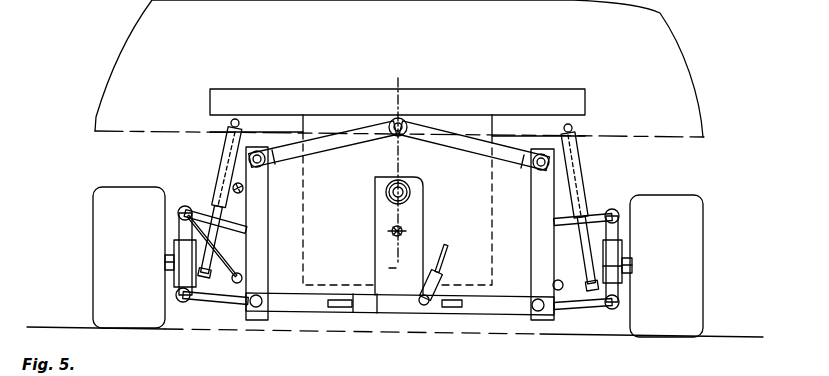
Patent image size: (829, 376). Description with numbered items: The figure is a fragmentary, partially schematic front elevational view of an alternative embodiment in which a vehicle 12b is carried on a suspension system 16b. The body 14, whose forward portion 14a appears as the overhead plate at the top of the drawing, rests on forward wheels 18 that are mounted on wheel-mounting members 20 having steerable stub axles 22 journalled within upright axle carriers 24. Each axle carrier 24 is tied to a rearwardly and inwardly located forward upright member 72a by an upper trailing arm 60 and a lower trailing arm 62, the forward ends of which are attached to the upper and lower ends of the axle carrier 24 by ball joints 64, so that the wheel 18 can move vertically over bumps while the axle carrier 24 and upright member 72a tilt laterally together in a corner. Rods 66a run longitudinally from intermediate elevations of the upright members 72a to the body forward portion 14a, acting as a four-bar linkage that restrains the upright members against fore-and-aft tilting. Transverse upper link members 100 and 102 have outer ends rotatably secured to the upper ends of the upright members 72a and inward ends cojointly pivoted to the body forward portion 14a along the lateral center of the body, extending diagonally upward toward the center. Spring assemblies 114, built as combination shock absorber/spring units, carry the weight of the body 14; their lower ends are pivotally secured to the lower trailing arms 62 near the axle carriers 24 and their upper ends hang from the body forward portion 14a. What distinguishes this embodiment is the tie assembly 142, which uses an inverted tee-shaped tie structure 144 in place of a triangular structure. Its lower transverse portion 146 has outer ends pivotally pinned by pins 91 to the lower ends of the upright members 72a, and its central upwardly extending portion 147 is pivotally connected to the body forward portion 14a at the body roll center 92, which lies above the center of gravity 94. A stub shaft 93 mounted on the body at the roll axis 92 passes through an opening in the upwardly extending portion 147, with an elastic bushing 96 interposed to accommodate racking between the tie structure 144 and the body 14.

The vehicle 12b is at (95, 64).
The body 14 is at (667, 16).
The body forward portion 14a is at (422, 90).
The forward upright member 72a is at (531, 232).
The upper link member 100 is at (340, 134).
The upper link member 102 is at (459, 137).
The forward spring assembly 114 is at (222, 158).
The rod 66a is at (213, 207).
The forward wheel 18 is at (93, 250).
The ball joint 64 is at (620, 208).
The upper trailing arm 60 is at (600, 216).
The lower trailing arm 62 is at (582, 308).
The stub axle 22 is at (624, 250).
The axle carrier 24 is at (618, 287).
The wheel-mounting member 20 is at (615, 316).
The suspension system 16b is at (478, 323).
The pin 91 is at (258, 307).
The tie assembly 142 is at (372, 319).
The tee-shaped tie structure 144 is at (452, 316).
The lower transverse portion 146 is at (476, 305).
The elastic bushing 96 is at (422, 200).
The roll axis 92 is at (387, 188).
The stub shaft 93 is at (407, 184).
The center of gravity 94 is at (391, 232).
The central upwardly extending portion 147 is at (390, 268).